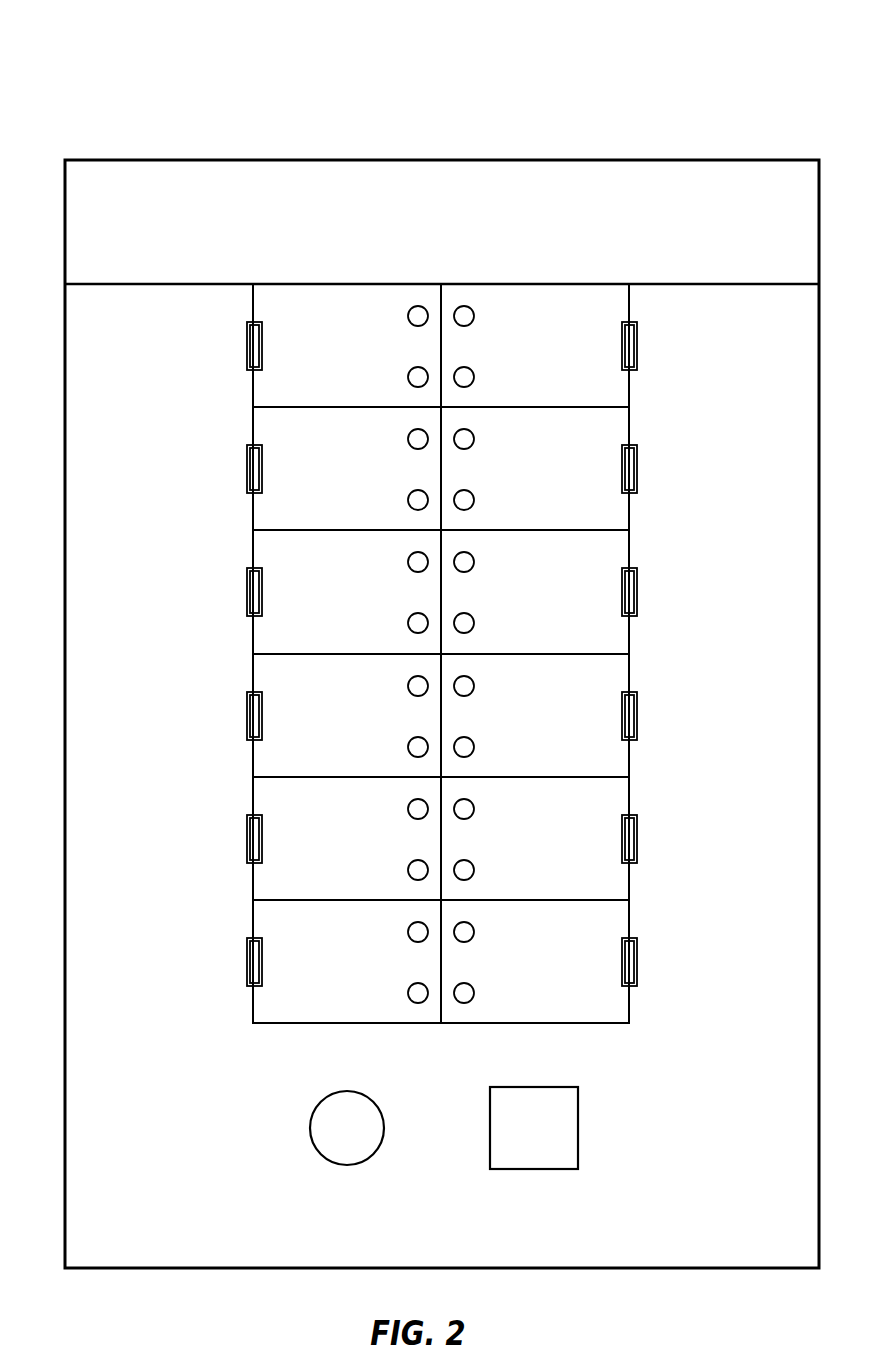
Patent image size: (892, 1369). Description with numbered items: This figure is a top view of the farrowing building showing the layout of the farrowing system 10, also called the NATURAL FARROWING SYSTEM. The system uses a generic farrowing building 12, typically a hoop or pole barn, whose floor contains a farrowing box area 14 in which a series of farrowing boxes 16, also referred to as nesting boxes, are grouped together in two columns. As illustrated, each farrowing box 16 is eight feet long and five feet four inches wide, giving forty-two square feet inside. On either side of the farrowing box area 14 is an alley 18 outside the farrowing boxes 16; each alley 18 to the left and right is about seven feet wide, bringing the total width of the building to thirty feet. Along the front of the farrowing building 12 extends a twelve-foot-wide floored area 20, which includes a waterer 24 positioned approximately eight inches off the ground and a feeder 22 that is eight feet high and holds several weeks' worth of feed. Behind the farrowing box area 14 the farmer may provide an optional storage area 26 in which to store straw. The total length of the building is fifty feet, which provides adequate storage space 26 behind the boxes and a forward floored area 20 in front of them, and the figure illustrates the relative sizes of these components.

The farrowing system 10 is at (140, 45).
The farrowing building 12 is at (238, 158).
The farrowing box area 14 is at (646, 428).
The farrowing box 16 is at (329, 365).
The alley 18 is at (134, 679).
The floored area 20 is at (436, 1226).
The feeder 22 is at (518, 1144).
The waterer 24 is at (331, 1144).
The storage area 26 is at (436, 238).